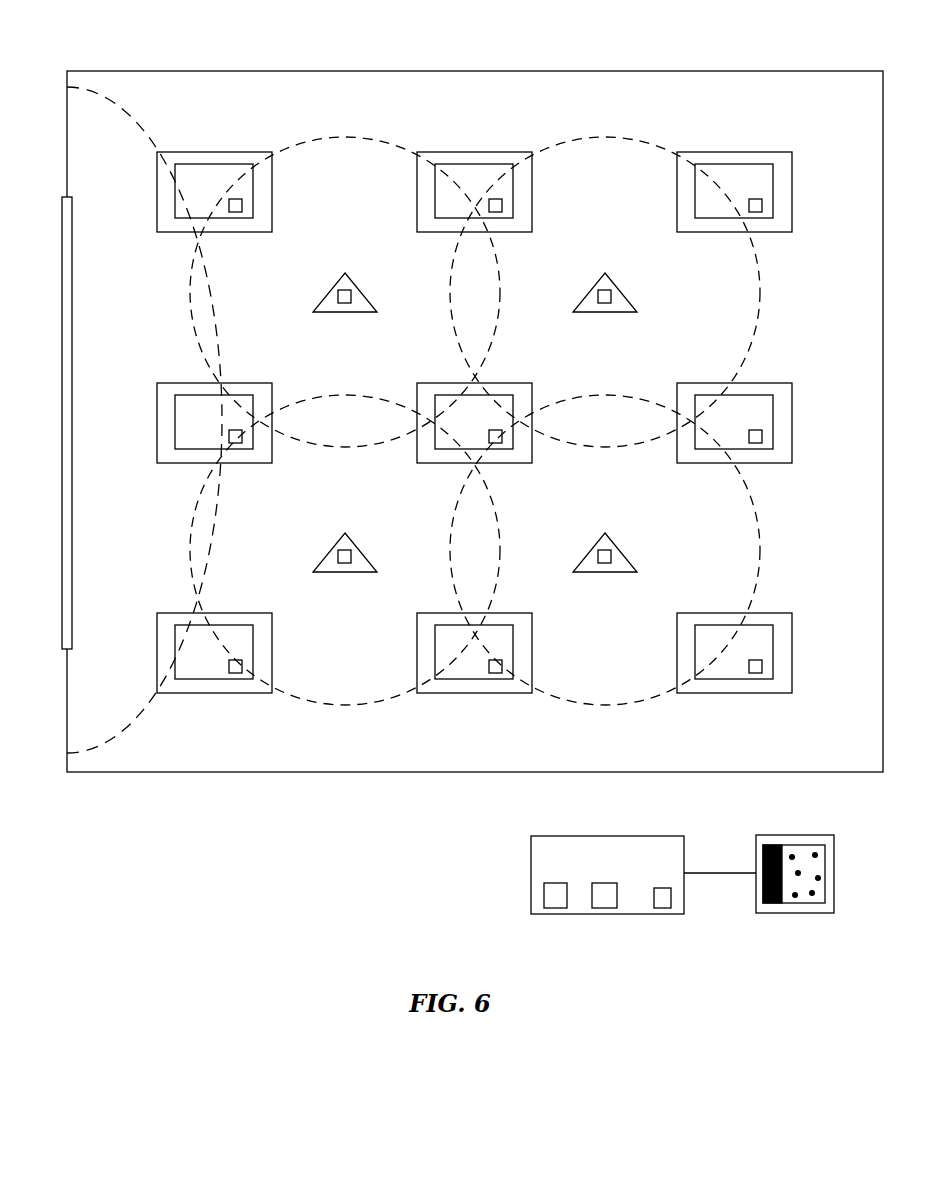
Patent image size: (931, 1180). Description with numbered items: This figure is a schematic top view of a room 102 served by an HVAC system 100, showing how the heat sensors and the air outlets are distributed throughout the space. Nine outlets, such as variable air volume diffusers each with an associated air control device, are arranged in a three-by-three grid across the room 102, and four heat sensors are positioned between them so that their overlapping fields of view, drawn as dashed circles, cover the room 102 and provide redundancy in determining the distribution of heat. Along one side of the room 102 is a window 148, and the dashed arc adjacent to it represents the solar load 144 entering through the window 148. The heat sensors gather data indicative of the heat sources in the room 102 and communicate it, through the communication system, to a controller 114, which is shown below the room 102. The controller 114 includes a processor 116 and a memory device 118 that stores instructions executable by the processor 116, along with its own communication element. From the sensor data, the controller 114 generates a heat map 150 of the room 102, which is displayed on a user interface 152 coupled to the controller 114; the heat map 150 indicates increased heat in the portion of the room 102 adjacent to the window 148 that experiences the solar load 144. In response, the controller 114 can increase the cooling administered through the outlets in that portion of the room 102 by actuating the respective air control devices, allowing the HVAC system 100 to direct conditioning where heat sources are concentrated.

The HVAC system 100 is at (524, 40).
The room 102 is at (437, 793).
The controller 114 is at (606, 836).
The processor 116 is at (544, 895).
The memory device 118 is at (605, 908).
The solar load 144 is at (125, 110).
The window 148 is at (62, 423).
The heat map 150 is at (825, 873).
The user interface 152 is at (795, 835).